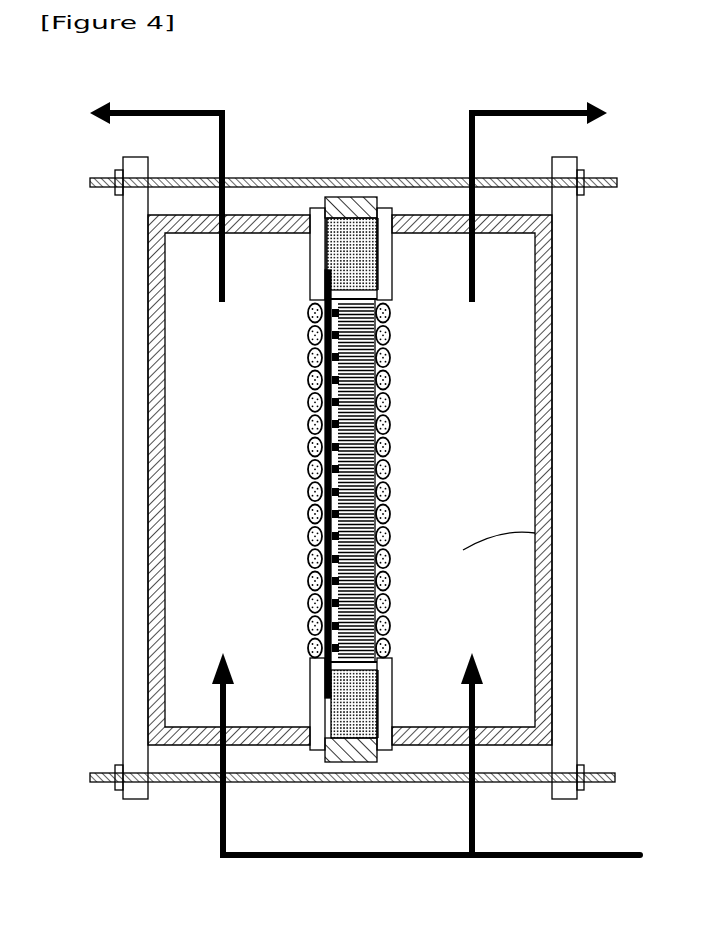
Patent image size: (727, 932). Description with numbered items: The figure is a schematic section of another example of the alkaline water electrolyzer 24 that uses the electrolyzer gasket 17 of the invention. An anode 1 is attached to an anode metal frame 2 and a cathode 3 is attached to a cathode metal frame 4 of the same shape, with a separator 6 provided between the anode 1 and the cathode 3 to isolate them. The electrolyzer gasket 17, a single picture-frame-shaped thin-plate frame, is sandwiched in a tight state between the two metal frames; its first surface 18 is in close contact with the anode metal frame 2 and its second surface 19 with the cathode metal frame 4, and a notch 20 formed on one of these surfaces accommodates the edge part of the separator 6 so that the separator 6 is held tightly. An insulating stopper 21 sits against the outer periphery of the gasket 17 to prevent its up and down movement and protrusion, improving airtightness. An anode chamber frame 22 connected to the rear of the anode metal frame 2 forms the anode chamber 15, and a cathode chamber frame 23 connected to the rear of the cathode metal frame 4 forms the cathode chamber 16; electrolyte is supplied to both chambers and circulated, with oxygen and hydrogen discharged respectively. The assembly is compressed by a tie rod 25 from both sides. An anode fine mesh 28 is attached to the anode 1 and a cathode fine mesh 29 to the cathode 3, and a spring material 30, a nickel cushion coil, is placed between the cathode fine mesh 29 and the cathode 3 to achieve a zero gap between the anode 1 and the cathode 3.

The anode 1 is at (356, 481).
The anode metal frame 2 is at (354, 473).
The cathode 3 is at (403, 481).
The cathode metal frame 4 is at (385, 257).
The separator 6 is at (327, 692).
The anode chamber 15 is at (258, 570).
The cathode chamber 16 is at (553, 555).
The electrolyzer gasket 17 is at (392, 238).
The first surface 18 is at (322, 262).
The second surface 19 is at (378, 270).
The notch 20 is at (325, 298).
The insulating stopper 21 is at (338, 197).
The anode chamber frame 22 is at (155, 527).
The cathode chamber frame 23 is at (547, 480).
The alkaline water electrolyzer 24 is at (419, 141).
The tie rod 25 is at (254, 183).
The anode fine mesh 28 is at (310, 385).
The cathode fine mesh 29 is at (355, 345).
The spring material 30 is at (390, 592).